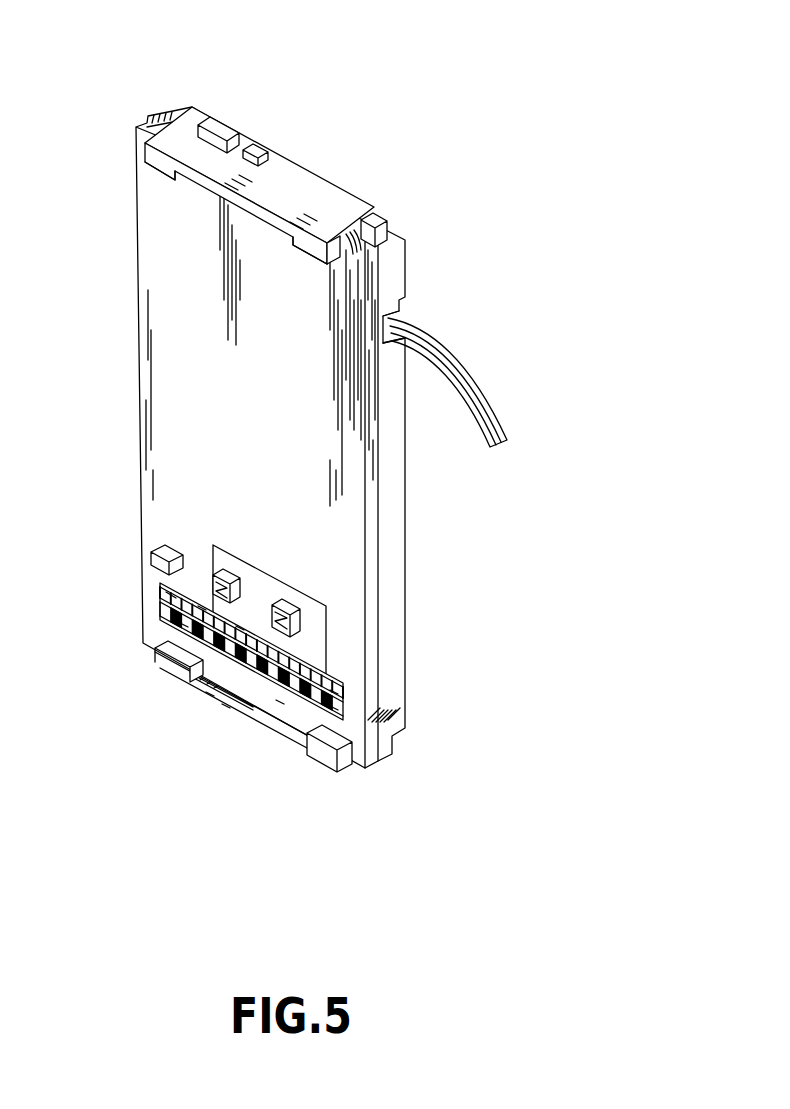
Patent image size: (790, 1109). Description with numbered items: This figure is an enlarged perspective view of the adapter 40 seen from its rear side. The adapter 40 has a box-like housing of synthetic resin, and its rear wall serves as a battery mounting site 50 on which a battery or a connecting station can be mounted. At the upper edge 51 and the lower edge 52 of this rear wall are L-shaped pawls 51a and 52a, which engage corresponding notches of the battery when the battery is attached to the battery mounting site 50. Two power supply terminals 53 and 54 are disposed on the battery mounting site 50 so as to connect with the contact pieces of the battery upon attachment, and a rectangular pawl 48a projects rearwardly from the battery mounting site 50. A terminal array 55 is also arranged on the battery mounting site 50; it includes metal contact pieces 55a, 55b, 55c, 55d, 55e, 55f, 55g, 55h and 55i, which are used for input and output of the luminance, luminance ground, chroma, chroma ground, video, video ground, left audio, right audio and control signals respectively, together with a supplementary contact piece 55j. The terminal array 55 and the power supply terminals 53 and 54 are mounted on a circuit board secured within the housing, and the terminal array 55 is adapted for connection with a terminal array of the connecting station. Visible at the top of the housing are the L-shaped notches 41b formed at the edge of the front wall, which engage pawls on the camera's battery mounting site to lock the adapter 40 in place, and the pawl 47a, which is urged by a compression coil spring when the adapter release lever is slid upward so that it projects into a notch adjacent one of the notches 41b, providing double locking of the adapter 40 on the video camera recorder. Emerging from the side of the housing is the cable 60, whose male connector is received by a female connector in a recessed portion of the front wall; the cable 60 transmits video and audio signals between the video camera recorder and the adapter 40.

The adapter 40 is at (405, 267).
The L-shaped notch 41b is at (212, 118).
The pawl 47a is at (258, 150).
The rectangular pawl 48a is at (151, 558).
The battery mounting site 50 is at (156, 385).
The upper edge 51 is at (236, 196).
The L-shaped pawl 51a is at (160, 168).
The lower edge 52 is at (252, 718).
The L-shaped pawl 52a is at (165, 660).
The power supply terminal 53 is at (300, 598).
The power supply terminal 54 is at (222, 573).
The terminal array 55 is at (326, 668).
The metal contact piece 55a is at (333, 700).
The metal contact piece 55b is at (330, 702).
The metal contact piece 55c is at (321, 656).
The metal contact piece 55d is at (280, 702).
The metal contact piece 55e is at (266, 636).
The metal contact piece 55f is at (227, 707).
The metal contact piece 55g is at (240, 630).
The metal contact piece 55h is at (210, 694).
The metal contact piece 55i is at (201, 610).
The supplementary contact piece 55j is at (186, 627).
The cable 60 is at (458, 376).